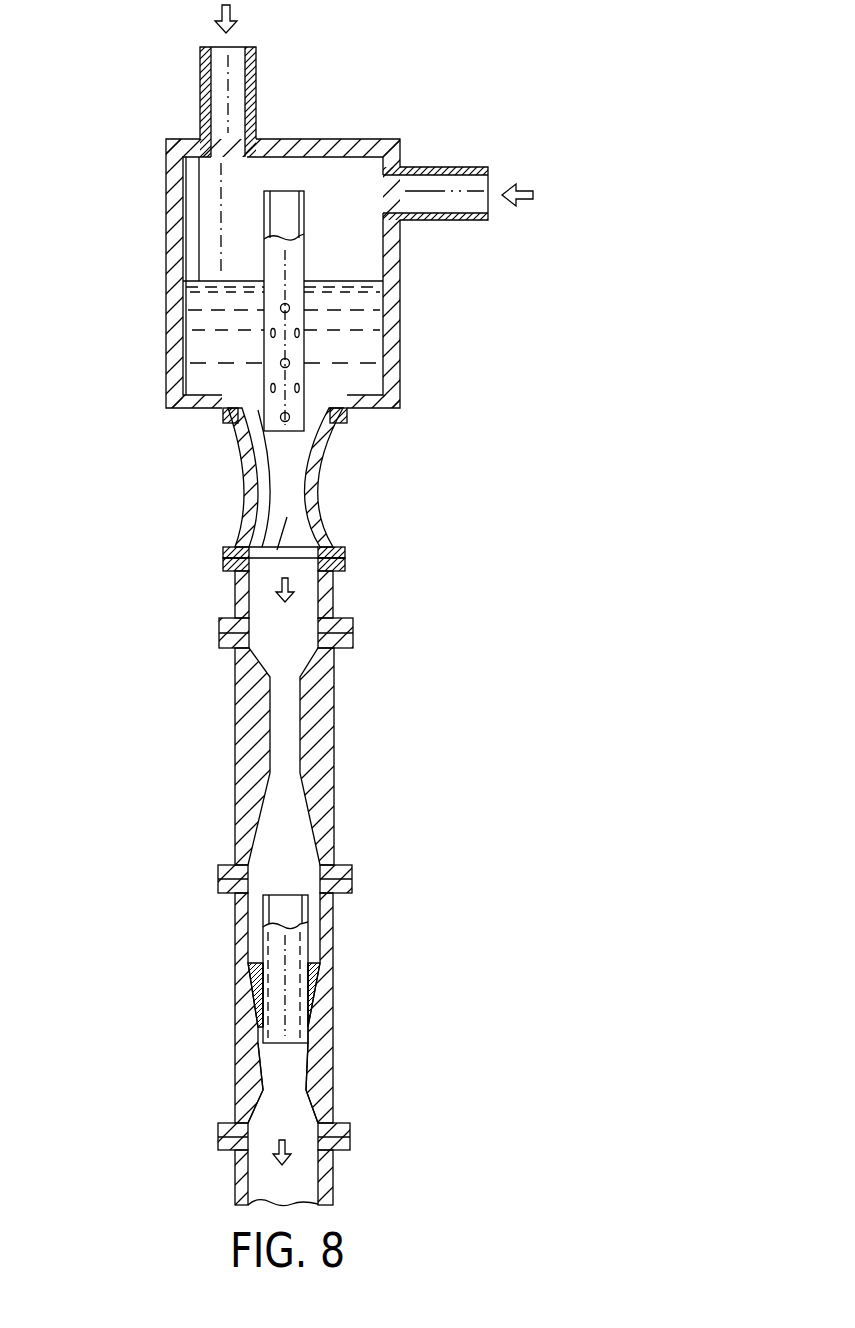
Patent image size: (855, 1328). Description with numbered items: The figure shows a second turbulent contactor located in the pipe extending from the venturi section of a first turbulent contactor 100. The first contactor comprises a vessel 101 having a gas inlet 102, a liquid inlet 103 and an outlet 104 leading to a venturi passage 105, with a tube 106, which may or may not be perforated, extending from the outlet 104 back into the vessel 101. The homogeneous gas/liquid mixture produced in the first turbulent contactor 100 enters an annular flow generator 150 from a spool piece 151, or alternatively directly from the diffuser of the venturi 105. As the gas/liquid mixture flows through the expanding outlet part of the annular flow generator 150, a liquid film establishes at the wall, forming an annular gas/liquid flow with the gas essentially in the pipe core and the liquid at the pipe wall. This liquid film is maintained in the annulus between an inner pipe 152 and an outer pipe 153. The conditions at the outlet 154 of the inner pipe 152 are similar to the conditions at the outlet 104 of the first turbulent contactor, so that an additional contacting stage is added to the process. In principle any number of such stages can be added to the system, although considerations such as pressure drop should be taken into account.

The turbulent contactor 100 is at (145, 230).
The vessel 101 is at (393, 373).
The gas inlet 102 is at (470, 165).
The liquid inlet 103 is at (256, 60).
The outlet 104 is at (327, 422).
The venturi passage 105 is at (287, 490).
The tube 106 is at (278, 320).
The annular flow generator 150 is at (323, 760).
The spool piece 151 is at (333, 589).
The inner pipe 152 is at (262, 945).
The outer pipe 153 is at (328, 967).
The outlet 154 is at (300, 1045).